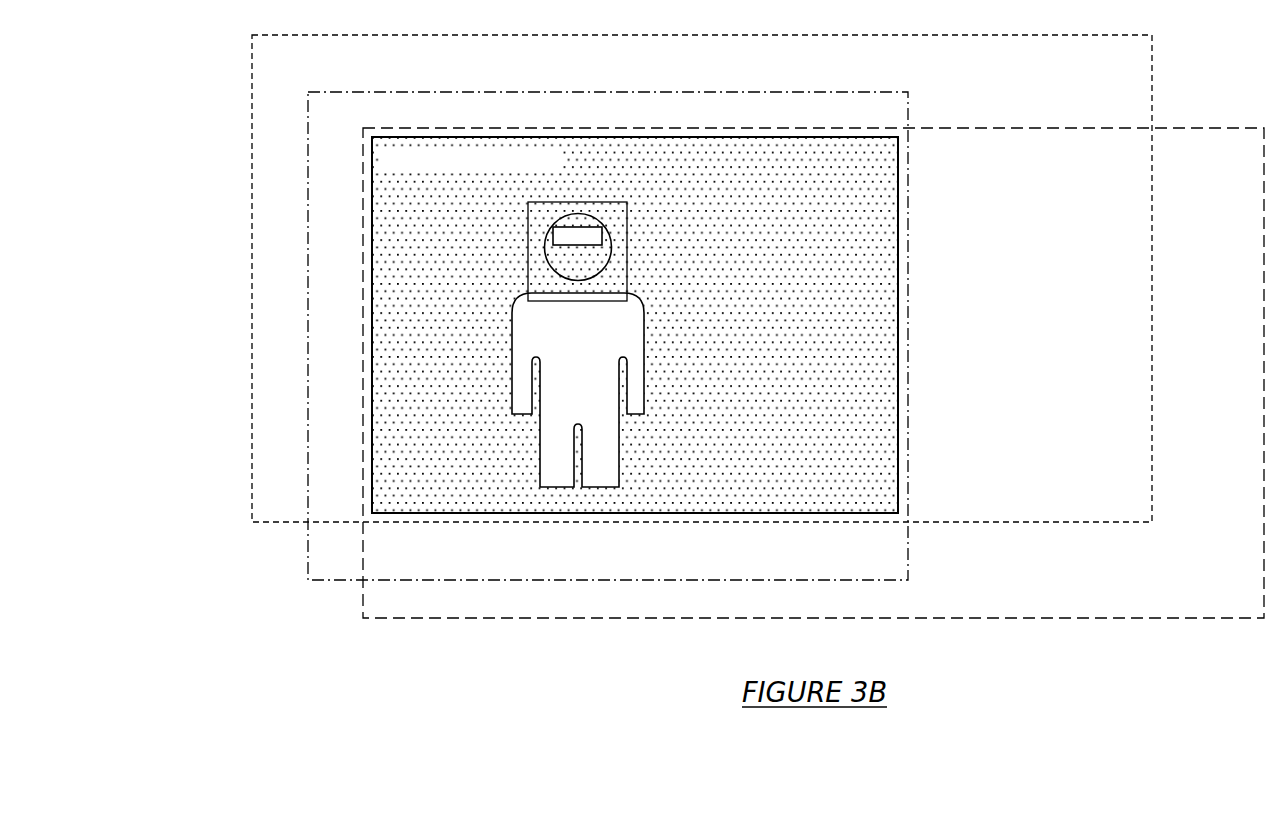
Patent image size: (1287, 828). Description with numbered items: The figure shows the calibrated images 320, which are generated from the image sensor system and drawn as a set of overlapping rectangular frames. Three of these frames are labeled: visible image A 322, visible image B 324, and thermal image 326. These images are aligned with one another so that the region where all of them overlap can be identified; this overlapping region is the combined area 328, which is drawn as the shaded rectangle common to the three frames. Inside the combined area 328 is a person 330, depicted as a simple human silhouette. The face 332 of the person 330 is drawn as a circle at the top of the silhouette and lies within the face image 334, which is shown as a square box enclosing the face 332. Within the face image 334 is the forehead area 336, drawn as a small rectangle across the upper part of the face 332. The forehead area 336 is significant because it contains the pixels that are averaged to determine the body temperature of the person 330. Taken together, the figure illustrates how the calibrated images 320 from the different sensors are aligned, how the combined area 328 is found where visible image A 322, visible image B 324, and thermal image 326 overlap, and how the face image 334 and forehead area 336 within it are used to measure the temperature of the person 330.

The calibrated images 320 is at (718, 369).
The visible image A 322 is at (438, 66).
The visible image B 324 is at (1255, 606).
The thermal image 326 is at (490, 122).
The combined area 328 is at (558, 170).
The person 330 is at (638, 390).
The face 332 is at (517, 238).
The face image 334 is at (637, 230).
The forehead area 336 is at (638, 255).